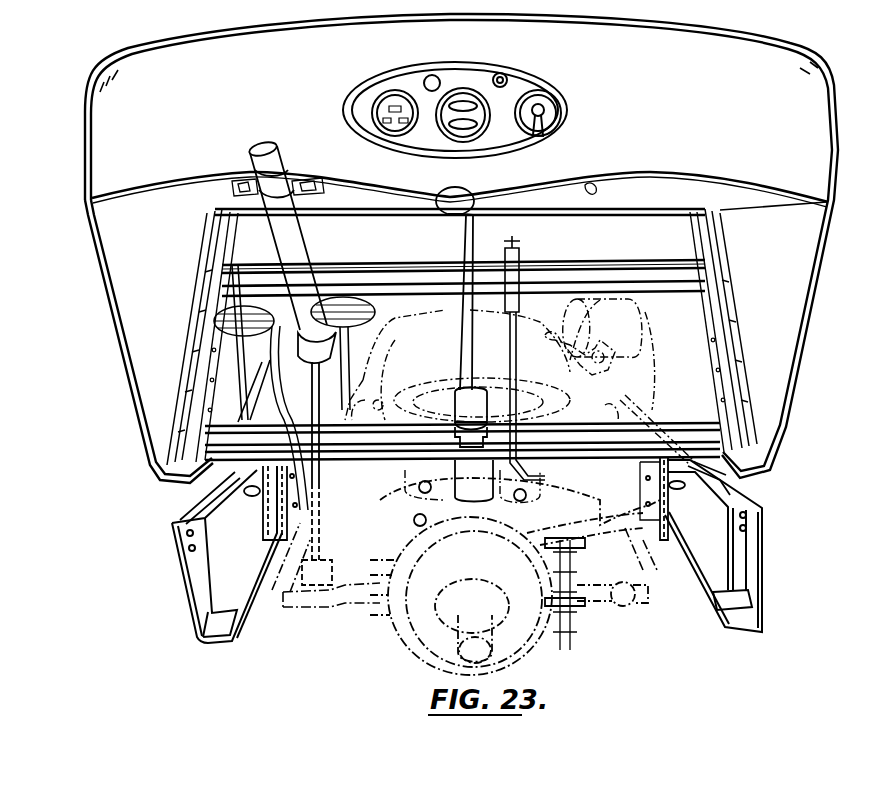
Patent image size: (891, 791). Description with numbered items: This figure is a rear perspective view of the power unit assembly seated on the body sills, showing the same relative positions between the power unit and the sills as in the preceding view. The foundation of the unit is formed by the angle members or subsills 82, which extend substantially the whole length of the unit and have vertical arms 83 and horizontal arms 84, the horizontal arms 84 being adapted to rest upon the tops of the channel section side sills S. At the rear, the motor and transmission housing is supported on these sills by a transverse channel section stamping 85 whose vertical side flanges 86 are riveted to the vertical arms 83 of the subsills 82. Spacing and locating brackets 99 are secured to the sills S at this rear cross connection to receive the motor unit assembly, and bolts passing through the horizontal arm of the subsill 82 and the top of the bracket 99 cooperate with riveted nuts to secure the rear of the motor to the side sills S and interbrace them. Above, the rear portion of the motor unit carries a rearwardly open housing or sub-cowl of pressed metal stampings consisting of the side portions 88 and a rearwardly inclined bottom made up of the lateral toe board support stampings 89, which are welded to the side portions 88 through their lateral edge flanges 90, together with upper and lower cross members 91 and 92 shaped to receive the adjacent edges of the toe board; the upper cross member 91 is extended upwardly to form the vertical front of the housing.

The angle members or subsills 82 is at (718, 447).
The vertical arms 83 is at (275, 518).
The horizontal arms 84 is at (230, 475).
The transverse channel section stamping 85 is at (515, 576).
The vertical side flanges 86 is at (473, 571).
The side portions 88 is at (460, 283).
The lateral toe board support stampings 89 is at (464, 337).
The lateral edge flanges 90 is at (212, 342).
The upper cross member 91 is at (618, 258).
The lower cross member 92 is at (712, 424).
The spacing and locating brackets 99 is at (708, 550).
The channel section side sills S is at (763, 581).